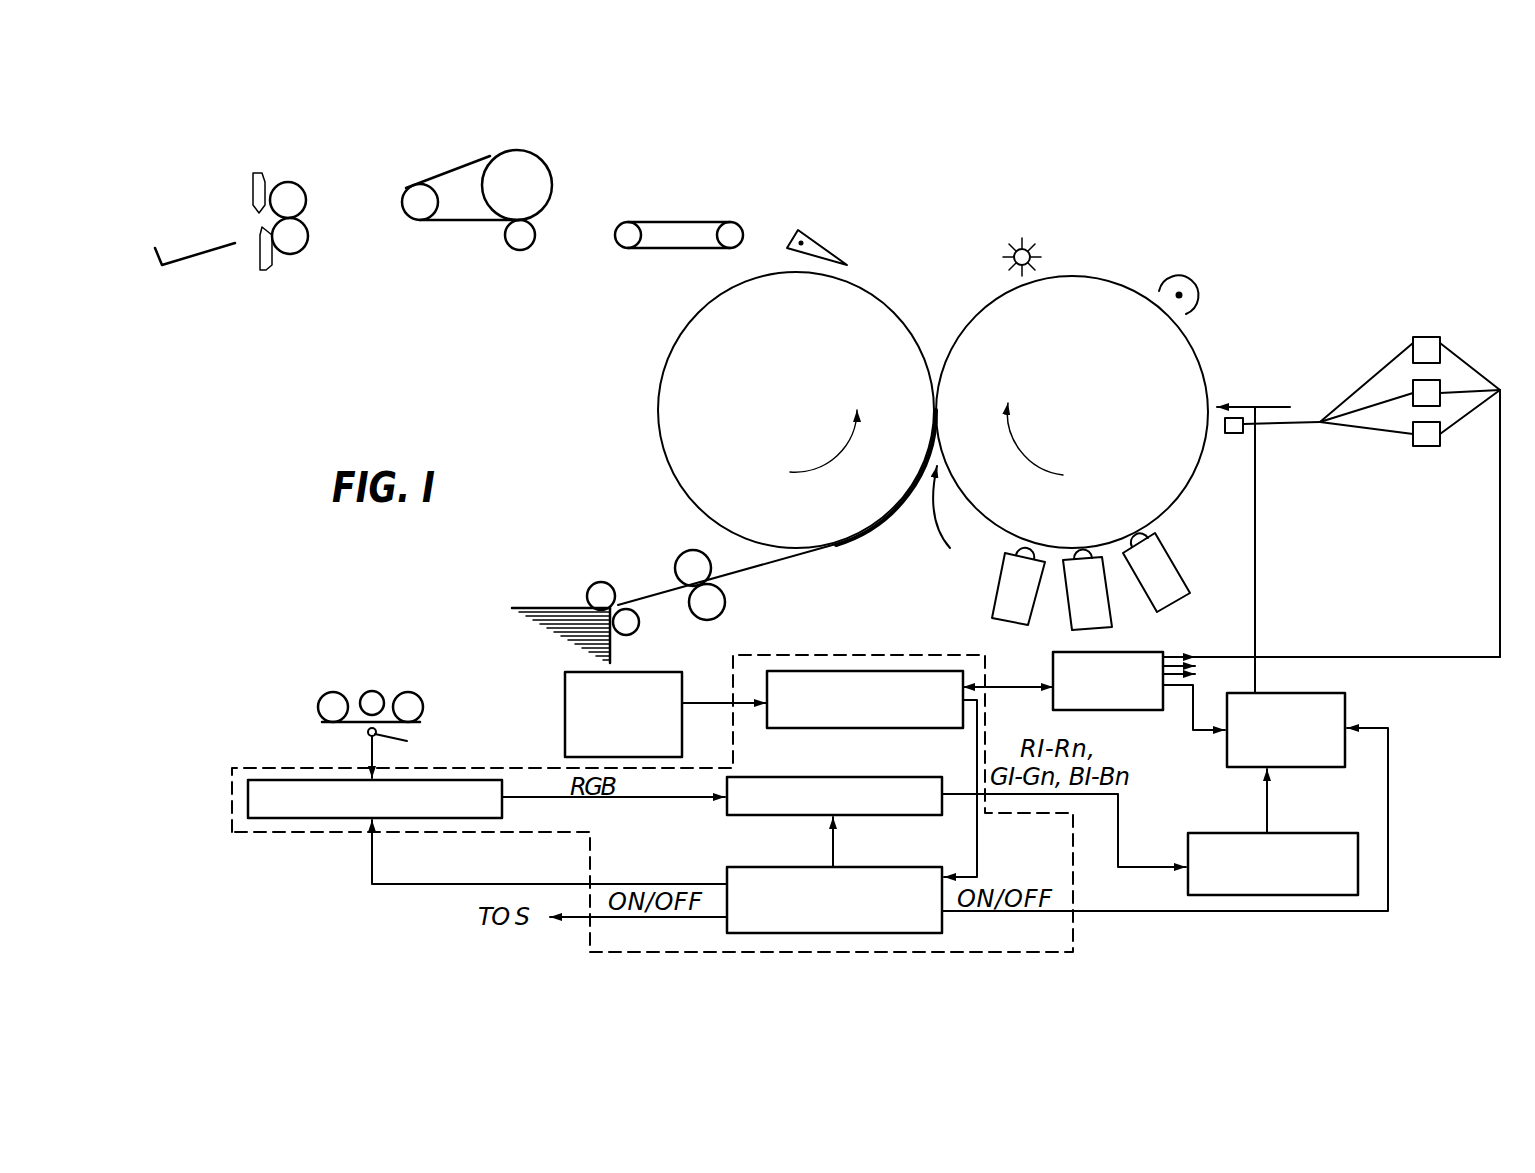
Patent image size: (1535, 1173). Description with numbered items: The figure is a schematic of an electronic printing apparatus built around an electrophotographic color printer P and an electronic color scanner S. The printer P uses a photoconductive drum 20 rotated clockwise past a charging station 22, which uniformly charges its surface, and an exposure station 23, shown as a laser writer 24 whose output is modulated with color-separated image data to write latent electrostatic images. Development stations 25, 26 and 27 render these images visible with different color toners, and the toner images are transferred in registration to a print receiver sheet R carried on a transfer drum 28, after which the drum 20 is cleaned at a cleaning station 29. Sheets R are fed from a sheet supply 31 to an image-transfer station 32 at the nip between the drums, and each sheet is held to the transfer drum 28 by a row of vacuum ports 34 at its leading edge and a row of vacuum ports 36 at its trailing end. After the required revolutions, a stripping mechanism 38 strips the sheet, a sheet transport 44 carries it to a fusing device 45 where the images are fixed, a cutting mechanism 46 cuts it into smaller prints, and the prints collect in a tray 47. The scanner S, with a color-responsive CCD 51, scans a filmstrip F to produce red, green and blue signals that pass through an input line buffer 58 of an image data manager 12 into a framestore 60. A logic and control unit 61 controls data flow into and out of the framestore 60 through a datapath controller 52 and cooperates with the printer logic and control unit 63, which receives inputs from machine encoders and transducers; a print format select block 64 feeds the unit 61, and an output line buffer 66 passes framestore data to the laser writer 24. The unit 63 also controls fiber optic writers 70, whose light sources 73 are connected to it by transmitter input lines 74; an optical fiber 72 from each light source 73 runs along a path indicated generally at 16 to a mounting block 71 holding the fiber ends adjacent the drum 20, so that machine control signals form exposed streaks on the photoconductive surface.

The image data manager 12 is at (848, 654).
The scanner output path 16 is at (1338, 481).
The drum 20 is at (1100, 278).
The charging station 22 is at (1202, 290).
The exposure station 23 is at (1252, 405).
The laser writer 24 is at (1347, 706).
The development station 25 is at (1172, 592).
The development station 26 is at (1100, 605).
The development station 27 is at (1022, 610).
The transfer drum 28 is at (889, 305).
The cleaning station 29 is at (1015, 246).
The sheet supply 31 is at (531, 607).
The image-transfer station 32 is at (954, 521).
The vacuum ports 34 is at (883, 507).
The vacuum ports 36 is at (678, 338).
The stripping mechanism 38 is at (815, 246).
The sheet transport 44 is at (690, 220).
The fusing device 45 is at (575, 173).
The cutting mechanism 46 is at (307, 180).
The tray 47 is at (182, 240).
The color-responsive CCD 51 is at (407, 741).
The data path controller 52 is at (888, 866).
The input line buffer 58 is at (292, 820).
The framestore 60 is at (749, 816).
The logic and control unit 61 is at (843, 729).
The logic and control unit 63 is at (1132, 711).
The print format select 64 is at (565, 715).
The output line buffer 66 is at (1304, 833).
The fiber optic writers 70 is at (1450, 312).
The mounting block 71 is at (1231, 435).
The optical fiber 72 is at (1377, 376).
The light sources 73 is at (1430, 447).
The transmitter input lines 74 is at (1466, 370).
The electrophotographic color printer P is at (1036, 218).
The electronic color scanner S is at (442, 715).
The filmstrip F is at (352, 723).
The print receiver sheet R is at (797, 557).